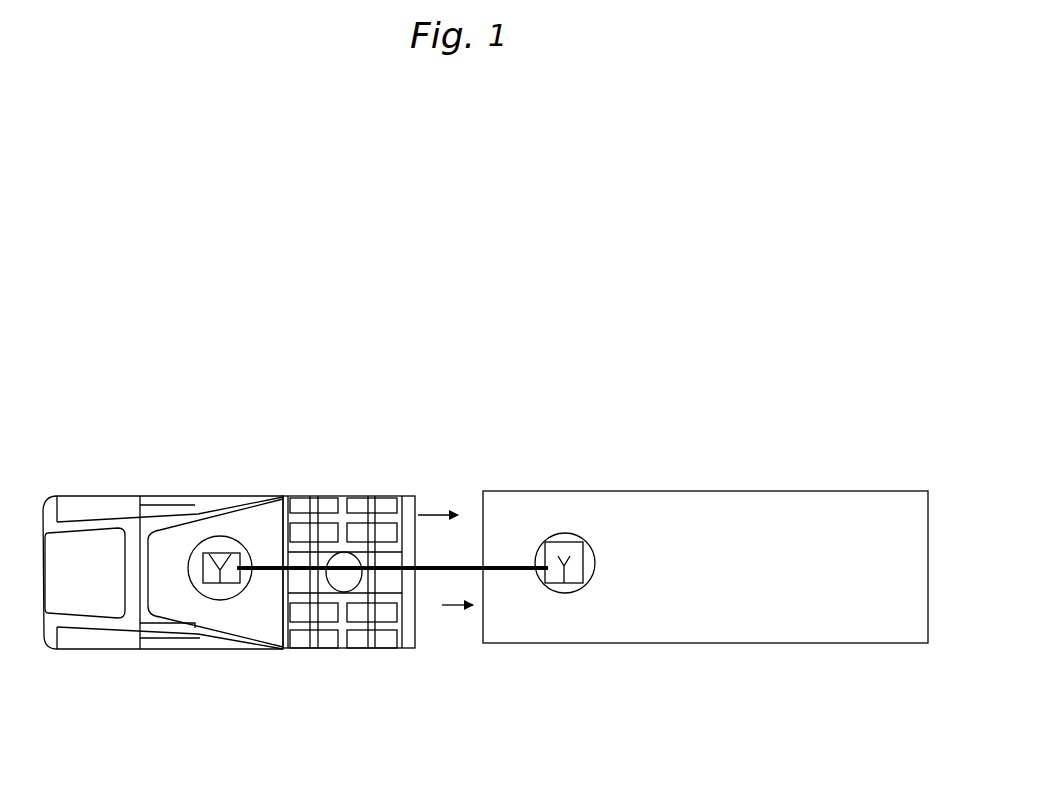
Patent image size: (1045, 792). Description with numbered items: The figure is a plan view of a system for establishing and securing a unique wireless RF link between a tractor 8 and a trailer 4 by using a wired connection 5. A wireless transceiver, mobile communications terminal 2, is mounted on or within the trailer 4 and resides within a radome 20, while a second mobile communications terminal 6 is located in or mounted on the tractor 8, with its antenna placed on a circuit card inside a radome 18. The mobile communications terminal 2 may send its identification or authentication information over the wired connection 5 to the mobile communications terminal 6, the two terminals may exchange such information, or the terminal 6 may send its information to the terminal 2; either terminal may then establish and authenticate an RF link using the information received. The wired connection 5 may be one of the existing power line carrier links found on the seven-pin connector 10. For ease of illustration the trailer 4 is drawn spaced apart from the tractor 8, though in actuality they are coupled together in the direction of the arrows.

The mobile communications terminal 2 is at (597, 560).
The trailer 4 is at (747, 495).
The wired connection 5 is at (430, 568).
The mobile communications terminal 6 is at (220, 553).
The tractor 8 is at (167, 497).
The 7-pin connector 10 is at (456, 570).
The radome 18 is at (257, 612).
The radome 20 is at (596, 611).